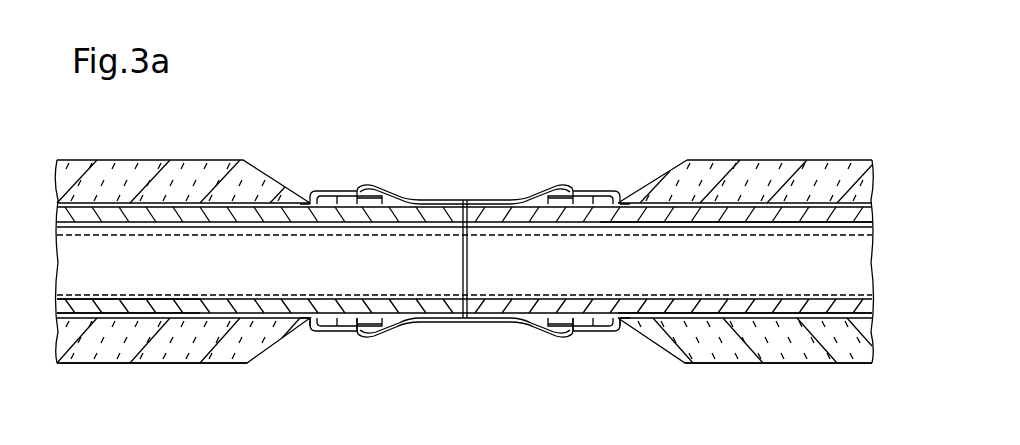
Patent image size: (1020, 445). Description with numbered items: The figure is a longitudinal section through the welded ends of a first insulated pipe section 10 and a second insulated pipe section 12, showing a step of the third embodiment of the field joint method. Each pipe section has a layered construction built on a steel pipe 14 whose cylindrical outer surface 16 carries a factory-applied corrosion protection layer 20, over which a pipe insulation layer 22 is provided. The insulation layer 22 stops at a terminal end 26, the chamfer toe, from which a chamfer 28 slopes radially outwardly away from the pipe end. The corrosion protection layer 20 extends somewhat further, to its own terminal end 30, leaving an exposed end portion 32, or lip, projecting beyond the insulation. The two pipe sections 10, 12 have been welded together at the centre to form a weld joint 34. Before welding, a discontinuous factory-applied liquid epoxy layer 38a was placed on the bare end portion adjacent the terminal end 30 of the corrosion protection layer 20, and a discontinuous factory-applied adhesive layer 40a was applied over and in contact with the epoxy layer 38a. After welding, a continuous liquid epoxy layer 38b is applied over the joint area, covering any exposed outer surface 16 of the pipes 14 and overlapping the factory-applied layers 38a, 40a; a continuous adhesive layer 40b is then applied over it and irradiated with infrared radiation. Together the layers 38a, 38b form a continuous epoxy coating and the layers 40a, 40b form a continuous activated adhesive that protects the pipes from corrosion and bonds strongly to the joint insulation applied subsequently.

The first insulated pipe section 10 is at (236, 146).
The second insulated pipe section 12 is at (706, 150).
The steel pipe 14 is at (874, 223).
The outer surface 16 is at (808, 204).
The corrosion protection layer 20 is at (88, 305).
The pipe insulation layer 22 is at (188, 353).
The terminal end 26 is at (312, 192).
The chamfer 28 is at (306, 201).
The terminal end of corrosion protection layer 30 is at (358, 333).
The exposed end portion 32 is at (325, 332).
The weld joint 34 is at (466, 200).
The factory-applied liquid epoxy layer 38a is at (338, 196).
The continuous liquid epoxy layer 38b is at (390, 333).
The factory-applied adhesive layer 40a is at (372, 187).
The continuous adhesive layer 40b is at (462, 328).